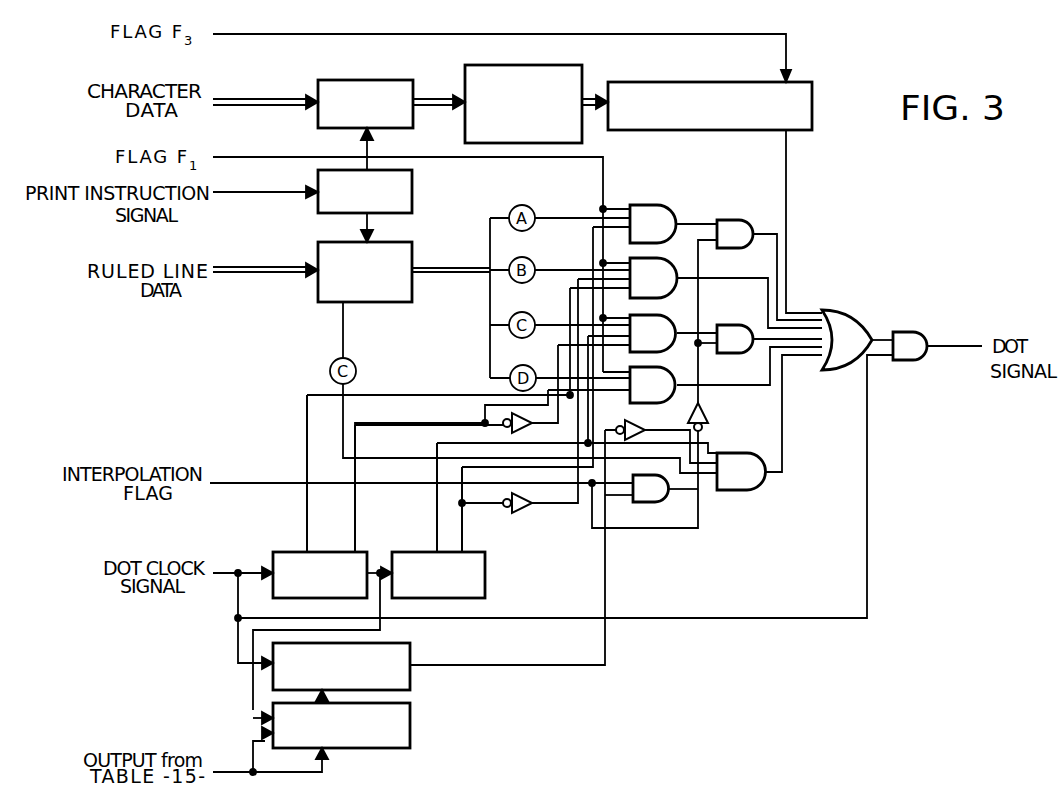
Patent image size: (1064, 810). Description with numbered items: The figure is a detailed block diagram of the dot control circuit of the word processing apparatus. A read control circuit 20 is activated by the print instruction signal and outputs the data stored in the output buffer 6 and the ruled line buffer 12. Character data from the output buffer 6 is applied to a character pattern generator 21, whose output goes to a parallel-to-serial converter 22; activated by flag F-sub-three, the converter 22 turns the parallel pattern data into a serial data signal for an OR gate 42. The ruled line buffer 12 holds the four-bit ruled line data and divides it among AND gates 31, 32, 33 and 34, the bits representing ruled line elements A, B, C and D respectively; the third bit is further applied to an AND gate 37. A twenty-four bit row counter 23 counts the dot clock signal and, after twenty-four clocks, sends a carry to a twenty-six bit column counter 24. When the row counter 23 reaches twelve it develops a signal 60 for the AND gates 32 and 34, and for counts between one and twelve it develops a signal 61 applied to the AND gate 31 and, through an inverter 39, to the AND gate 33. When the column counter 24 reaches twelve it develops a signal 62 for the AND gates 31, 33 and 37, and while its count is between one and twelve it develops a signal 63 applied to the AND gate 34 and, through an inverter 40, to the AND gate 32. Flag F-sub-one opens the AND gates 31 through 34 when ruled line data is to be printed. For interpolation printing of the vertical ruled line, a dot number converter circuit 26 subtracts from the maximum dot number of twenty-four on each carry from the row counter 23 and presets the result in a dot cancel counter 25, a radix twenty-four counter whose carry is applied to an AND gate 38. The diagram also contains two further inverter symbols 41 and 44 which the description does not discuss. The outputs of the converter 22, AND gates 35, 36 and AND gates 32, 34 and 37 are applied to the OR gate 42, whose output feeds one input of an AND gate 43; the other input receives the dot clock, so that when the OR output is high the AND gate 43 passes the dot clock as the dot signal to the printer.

The output buffer 6 is at (400, 80).
The character pattern generator 21 is at (572, 66).
The parallel-to-serial converter 22 is at (810, 84).
The read control circuit 20 is at (413, 183).
The ruled line buffer 12 is at (413, 243).
The AND gate 31 is at (657, 212).
The AND gate 32 is at (657, 260).
The AND gate 33 is at (658, 317).
The AND gate 34 is at (657, 367).
The AND gate 35 is at (742, 213).
The AND gate 36 is at (730, 325).
The AND gate 37 is at (737, 452).
The AND gate 38 is at (657, 505).
The inverter 39 is at (508, 415).
The inverter 40 is at (530, 513).
The inverter 41 is at (633, 420).
The OR gate 42 is at (852, 315).
The AND gate 43 is at (912, 332).
The inverter 44 is at (710, 415).
The row counter 23 is at (358, 555).
The column counter 24 is at (487, 572).
The dot cancel counter 25 is at (412, 678).
The dot number converter circuit 26 is at (413, 732).
The signal 60 is at (305, 500).
The signal 61 is at (357, 502).
The signal 62 is at (438, 502).
The signal 63 is at (465, 517).